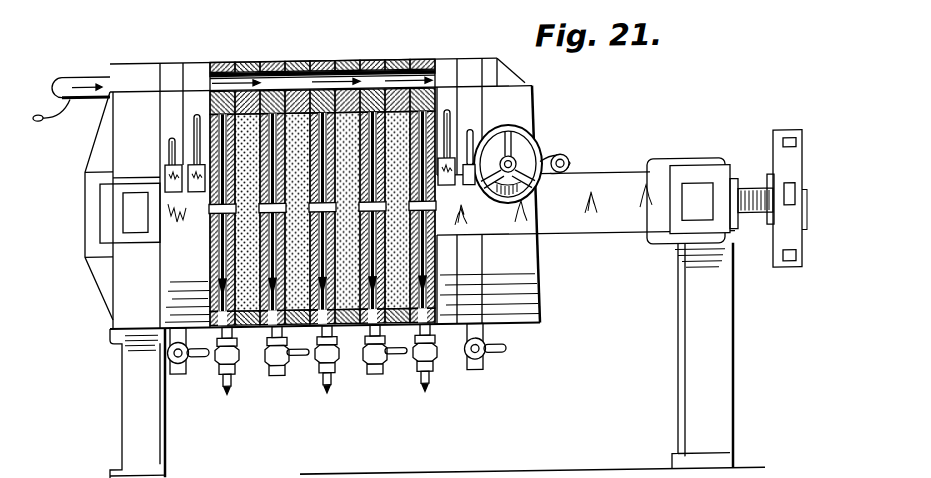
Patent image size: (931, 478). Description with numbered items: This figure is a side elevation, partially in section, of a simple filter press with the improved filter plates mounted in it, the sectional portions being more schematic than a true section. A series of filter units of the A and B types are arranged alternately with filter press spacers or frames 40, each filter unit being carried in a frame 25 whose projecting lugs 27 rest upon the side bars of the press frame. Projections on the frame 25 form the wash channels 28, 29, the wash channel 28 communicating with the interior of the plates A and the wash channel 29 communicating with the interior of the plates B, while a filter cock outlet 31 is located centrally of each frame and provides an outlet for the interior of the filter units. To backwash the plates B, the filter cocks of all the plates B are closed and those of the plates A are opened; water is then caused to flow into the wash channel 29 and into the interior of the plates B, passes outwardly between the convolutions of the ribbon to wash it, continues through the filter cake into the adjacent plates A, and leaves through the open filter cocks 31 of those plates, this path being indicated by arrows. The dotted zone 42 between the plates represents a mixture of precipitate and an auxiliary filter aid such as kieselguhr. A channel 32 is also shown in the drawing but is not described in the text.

The frame 25 is at (341, 62).
The projecting lugs 27 is at (196, 184).
The wash channel 28 is at (74, 78).
The wash channel 29 is at (100, 78).
The filter cock outlet 31 is at (218, 355).
The channel 32 is at (217, 109).
The filter press spacers or frames 40 is at (346, 77).
The dotted zone 42 is at (280, 374).
The filter plate A is at (218, 63).
The filter plate B is at (268, 64).